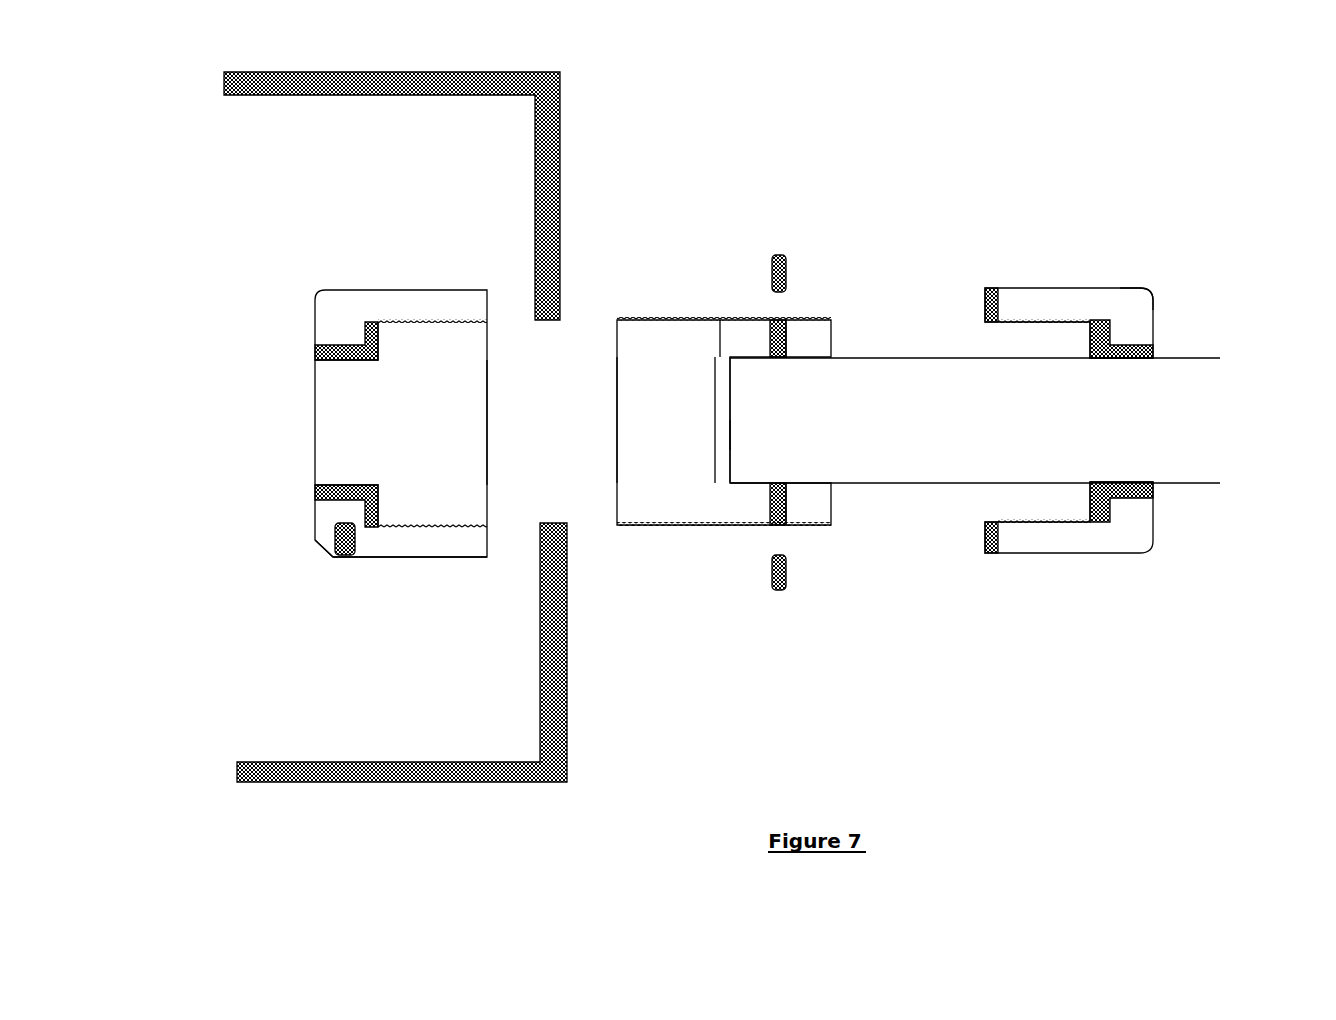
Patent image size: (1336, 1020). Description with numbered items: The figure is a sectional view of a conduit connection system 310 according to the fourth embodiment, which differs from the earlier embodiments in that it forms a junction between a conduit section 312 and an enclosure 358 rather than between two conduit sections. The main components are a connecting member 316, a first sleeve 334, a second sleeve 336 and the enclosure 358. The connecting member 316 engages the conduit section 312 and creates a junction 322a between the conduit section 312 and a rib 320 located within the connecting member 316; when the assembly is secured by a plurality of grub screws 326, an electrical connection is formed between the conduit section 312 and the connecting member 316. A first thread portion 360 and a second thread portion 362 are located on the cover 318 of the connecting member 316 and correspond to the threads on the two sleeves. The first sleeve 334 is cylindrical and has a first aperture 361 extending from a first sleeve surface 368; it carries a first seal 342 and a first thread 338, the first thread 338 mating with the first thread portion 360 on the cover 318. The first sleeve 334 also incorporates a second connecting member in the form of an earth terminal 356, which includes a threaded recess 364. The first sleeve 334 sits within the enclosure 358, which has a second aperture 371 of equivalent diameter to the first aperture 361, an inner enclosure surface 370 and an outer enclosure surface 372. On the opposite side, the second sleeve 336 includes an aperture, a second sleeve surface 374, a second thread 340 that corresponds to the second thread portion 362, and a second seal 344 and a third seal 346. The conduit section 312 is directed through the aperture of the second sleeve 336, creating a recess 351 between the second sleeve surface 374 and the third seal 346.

The conduit connection system 310 is at (1028, 454).
The conduit section 312 is at (1103, 435).
The connecting member 316 is at (925, 412).
The cover 318 is at (723, 320).
The rib 320 is at (706, 391).
The junction 322a is at (735, 433).
The grub screws 326 is at (785, 577).
The first sleeve 334 is at (327, 538).
The second sleeve 336 is at (1113, 530).
The first thread 338 is at (400, 317).
The second thread 340 is at (1143, 254).
The first seal 342 is at (325, 497).
The second seal 344 is at (1035, 320).
The third seal 346 is at (1117, 350).
The recess 351 is at (1140, 288).
The earth terminal 356 is at (364, 567).
The enclosure 358 is at (551, 633).
The first thread portion 360 is at (640, 320).
The first aperture 361 is at (313, 432).
The second thread portion 362 is at (750, 320).
The threaded recess 364 is at (347, 540).
The first sleeve surface 368 is at (482, 312).
The inner enclosure surface 370 is at (347, 195).
The second aperture 371 is at (550, 405).
The outer enclosure surface 372 is at (557, 263).
The second sleeve surface 374 is at (985, 290).